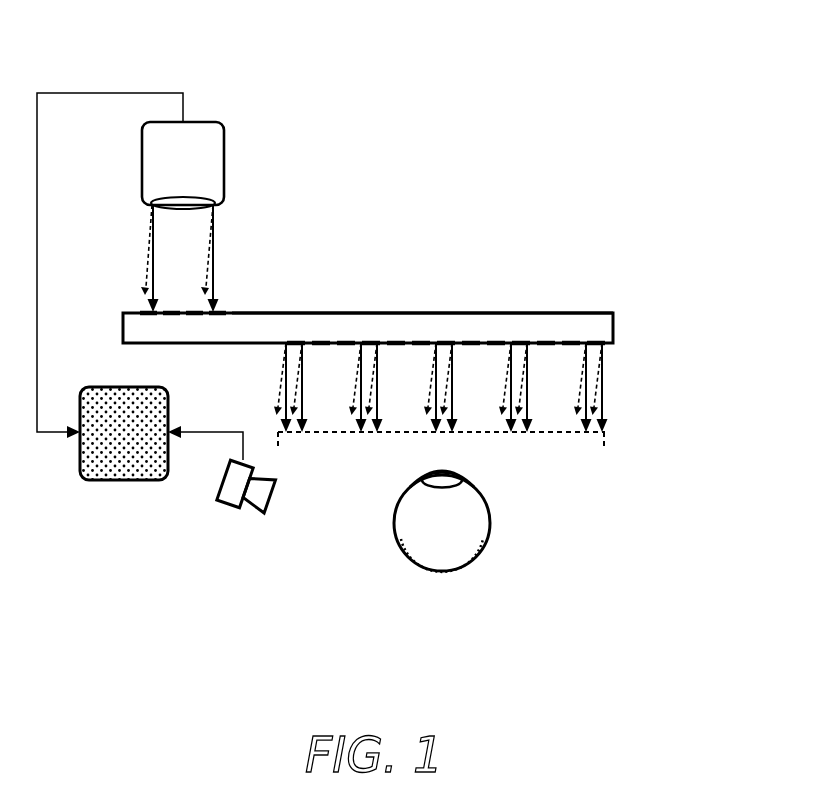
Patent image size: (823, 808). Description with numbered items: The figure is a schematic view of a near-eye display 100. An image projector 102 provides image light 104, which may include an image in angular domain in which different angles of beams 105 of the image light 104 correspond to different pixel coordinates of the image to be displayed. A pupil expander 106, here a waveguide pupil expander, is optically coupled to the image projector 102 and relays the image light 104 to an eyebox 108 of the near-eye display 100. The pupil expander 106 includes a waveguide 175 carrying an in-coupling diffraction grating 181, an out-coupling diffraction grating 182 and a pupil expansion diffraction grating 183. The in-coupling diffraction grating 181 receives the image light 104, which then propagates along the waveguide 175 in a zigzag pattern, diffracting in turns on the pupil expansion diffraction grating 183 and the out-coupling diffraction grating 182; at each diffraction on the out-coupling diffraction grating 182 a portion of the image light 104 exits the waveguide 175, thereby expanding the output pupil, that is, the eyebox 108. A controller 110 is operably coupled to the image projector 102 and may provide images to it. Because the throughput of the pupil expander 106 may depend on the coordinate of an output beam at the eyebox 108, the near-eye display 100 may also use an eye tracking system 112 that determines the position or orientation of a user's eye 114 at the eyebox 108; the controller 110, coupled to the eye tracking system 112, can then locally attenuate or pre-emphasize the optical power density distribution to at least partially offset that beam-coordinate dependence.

The near-eye display 100 is at (531, 126).
The image projector 102 is at (159, 168).
The image light 104 is at (234, 223).
The beams 105 is at (148, 240).
The pupil expander 106 is at (430, 254).
The eyebox 108 is at (606, 436).
The controller 110 is at (125, 481).
The eye tracking system 112 is at (232, 509).
The user's eye 114 is at (490, 515).
The waveguide 175 is at (613, 325).
The in-coupling diffraction grating 181 is at (203, 317).
The out-coupling diffraction grating 182 is at (338, 343).
The pupil expansion diffraction grating 183 is at (527, 313).